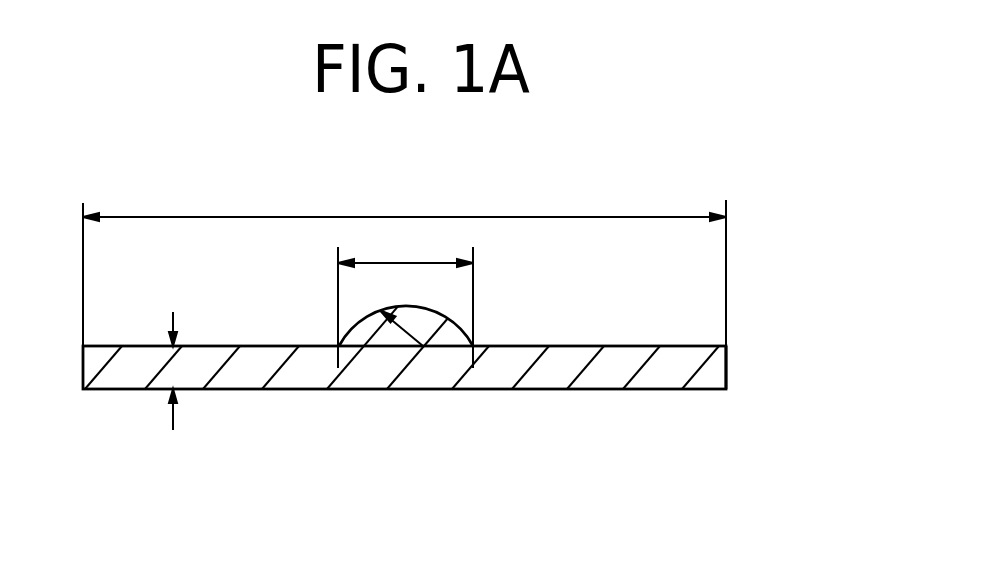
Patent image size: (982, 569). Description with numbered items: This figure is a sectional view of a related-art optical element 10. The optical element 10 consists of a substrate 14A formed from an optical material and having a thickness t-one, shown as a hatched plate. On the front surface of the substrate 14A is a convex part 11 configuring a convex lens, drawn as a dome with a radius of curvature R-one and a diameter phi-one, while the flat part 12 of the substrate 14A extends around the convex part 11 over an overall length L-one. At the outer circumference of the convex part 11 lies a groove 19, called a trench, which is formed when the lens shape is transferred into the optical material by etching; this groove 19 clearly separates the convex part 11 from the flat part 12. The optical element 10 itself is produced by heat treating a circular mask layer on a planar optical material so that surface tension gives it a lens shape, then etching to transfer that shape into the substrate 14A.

The optical element 10 is at (432, 157).
The convex part 11 is at (438, 313).
The flat part 12 is at (573, 346).
The substrate 14A is at (727, 361).
The groove 19 is at (476, 350).